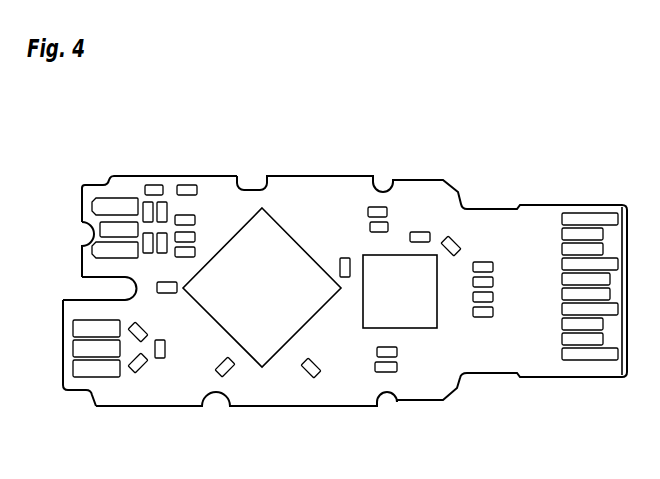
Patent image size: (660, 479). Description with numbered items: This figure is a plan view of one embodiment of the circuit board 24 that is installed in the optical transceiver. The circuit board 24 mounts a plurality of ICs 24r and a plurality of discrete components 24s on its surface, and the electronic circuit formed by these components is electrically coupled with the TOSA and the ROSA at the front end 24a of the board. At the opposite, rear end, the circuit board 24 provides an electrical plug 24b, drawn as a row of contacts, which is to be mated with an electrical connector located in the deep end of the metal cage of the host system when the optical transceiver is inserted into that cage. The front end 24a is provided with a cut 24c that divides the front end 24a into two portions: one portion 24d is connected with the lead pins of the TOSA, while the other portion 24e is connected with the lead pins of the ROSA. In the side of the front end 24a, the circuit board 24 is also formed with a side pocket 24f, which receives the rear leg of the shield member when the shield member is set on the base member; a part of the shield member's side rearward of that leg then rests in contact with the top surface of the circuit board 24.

The circuit board 24 is at (524, 98).
The front end 24a is at (137, 128).
The electrical plug 24b is at (618, 206).
The cut 24c is at (92, 288).
The portion connected with TOSA lead pins 24d is at (86, 206).
The portion connected with ROSA lead pins 24e is at (73, 385).
The side pocket 24f is at (88, 181).
The ICs 24r is at (380, 270).
The discrete components 24s is at (420, 230).